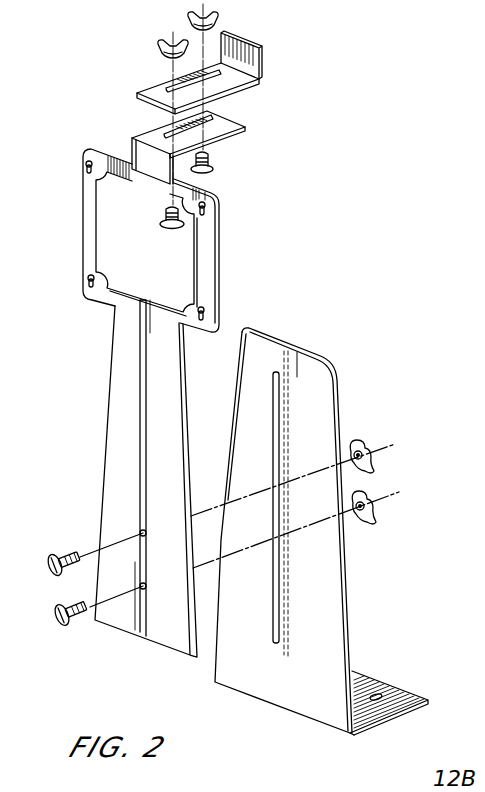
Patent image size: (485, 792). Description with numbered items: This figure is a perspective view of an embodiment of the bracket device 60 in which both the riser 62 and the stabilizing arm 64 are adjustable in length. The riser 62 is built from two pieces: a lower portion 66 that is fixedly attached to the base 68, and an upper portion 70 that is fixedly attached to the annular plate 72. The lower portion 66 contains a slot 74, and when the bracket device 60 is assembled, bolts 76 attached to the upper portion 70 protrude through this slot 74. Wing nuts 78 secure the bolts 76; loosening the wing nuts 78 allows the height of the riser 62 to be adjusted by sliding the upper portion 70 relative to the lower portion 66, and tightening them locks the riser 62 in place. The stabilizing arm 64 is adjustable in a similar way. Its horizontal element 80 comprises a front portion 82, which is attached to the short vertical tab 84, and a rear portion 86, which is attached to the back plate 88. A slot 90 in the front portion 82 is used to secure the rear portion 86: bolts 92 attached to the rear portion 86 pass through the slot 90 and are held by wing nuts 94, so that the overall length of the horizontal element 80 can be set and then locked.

The bracket device 60 is at (158, 403).
The riser 62 is at (308, 549).
The stabilizing arm 64 is at (172, 164).
The lower portion 66 is at (332, 640).
The base 68 is at (368, 725).
The upper portion 70 is at (110, 396).
The annular plate 72 is at (206, 265).
The slot 74 is at (280, 587).
The bolts 76 is at (68, 604).
The wing nuts 78 is at (373, 491).
The horizontal element 80 is at (140, 135).
The front portion 82 is at (132, 137).
The short vertical tab 84 is at (147, 163).
The rear portion 86 is at (196, 74).
The back plate 88 is at (263, 41).
The slot 90 is at (238, 88).
The bolts 92 is at (212, 172).
The wing nuts 94 is at (173, 44).